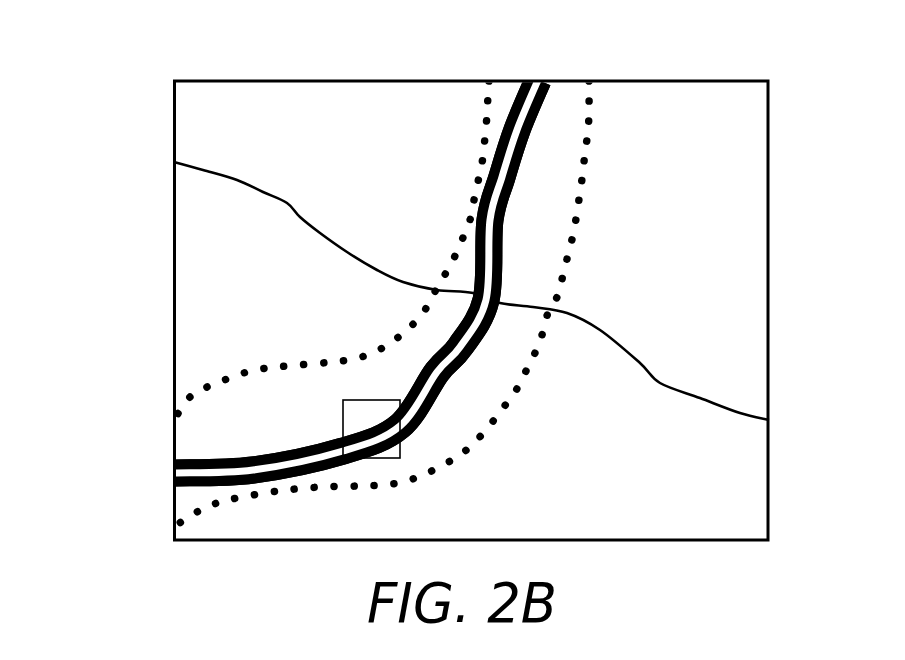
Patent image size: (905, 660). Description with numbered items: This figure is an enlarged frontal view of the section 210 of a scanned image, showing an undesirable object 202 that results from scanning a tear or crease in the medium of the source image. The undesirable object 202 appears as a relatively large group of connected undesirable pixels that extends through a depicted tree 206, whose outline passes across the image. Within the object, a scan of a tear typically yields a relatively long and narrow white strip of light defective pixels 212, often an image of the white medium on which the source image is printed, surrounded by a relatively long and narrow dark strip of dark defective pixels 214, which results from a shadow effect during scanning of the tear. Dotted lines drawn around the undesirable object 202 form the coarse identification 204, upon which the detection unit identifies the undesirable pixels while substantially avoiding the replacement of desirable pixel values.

The section 210 is at (174, 123).
The tree 206 is at (657, 381).
The coarse identification 204 is at (460, 243).
The dark defective pixels 214 is at (548, 103).
The light defective pixels 212 is at (520, 155).
The undesirable object 202 is at (518, 212).